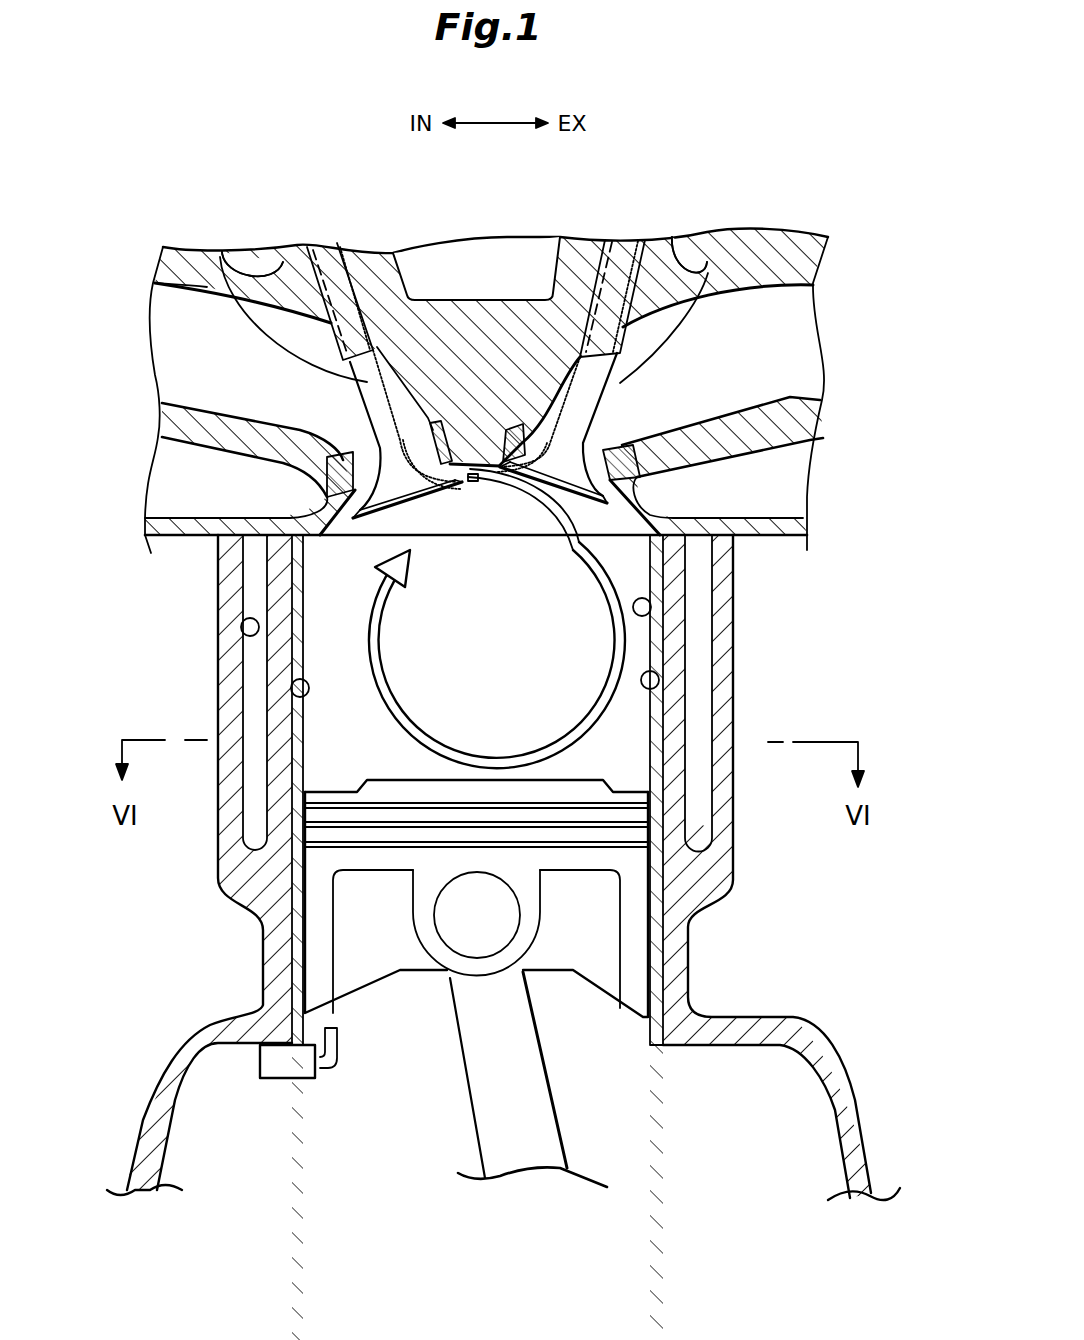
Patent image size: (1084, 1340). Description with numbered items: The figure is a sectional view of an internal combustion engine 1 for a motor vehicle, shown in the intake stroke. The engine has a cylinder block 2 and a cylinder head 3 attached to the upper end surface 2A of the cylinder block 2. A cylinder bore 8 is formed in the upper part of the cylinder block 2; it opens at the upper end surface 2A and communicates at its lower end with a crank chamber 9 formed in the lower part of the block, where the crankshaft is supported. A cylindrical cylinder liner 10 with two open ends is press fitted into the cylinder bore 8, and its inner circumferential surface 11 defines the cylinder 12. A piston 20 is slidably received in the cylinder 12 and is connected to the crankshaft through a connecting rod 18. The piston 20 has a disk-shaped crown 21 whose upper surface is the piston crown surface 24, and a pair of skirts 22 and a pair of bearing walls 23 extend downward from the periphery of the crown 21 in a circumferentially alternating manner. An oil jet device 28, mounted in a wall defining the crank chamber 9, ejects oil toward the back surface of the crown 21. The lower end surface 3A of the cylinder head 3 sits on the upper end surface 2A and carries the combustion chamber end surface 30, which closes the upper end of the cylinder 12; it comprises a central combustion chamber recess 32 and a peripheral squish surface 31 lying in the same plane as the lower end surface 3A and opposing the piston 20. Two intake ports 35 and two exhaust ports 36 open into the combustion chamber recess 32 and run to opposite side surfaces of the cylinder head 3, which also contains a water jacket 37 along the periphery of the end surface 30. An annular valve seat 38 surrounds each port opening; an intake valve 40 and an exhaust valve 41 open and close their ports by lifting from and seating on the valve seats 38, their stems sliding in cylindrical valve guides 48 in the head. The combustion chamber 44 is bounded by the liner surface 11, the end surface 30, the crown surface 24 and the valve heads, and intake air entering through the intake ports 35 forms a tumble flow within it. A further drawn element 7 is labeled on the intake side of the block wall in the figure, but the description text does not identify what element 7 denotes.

The internal combustion engine 1 is at (792, 220).
The cylinder block 2 is at (157, 1088).
The upper end surface of the cylinder block 2A is at (203, 538).
The cylinder head 3 is at (167, 413).
The lower end surface of the cylinder head 3A is at (733, 548).
The intake-side water jacket 7 is at (240, 633).
The cylinder bore 8 is at (290, 703).
The crank chamber 9 is at (704, 1143).
The cylinder liner 10 is at (660, 940).
The inner circumferential surface of the cylinder liner 11 is at (655, 615).
The cylinder 12 is at (673, 688).
The connecting rod 18 is at (537, 1088).
The piston 20 is at (300, 930).
The crown 21 is at (570, 866).
The skirt 22 is at (315, 980).
The bearing wall 23 is at (563, 953).
The piston crown surface 24 is at (645, 780).
The oil jet device 28 is at (288, 1067).
The combustion chamber end surface 30 is at (497, 480).
The squish surface 31 is at (315, 537).
The combustion chamber recess 32 is at (590, 555).
The intake port 35 is at (190, 405).
The exhaust port 36 is at (790, 397).
The water jacket 37 is at (180, 505).
The valve seat 38 is at (322, 465).
The intake valve 40 is at (220, 257).
The exhaust valve 41 is at (708, 273).
The combustion chamber 44 is at (513, 681).
The valve guide 48 is at (340, 277).